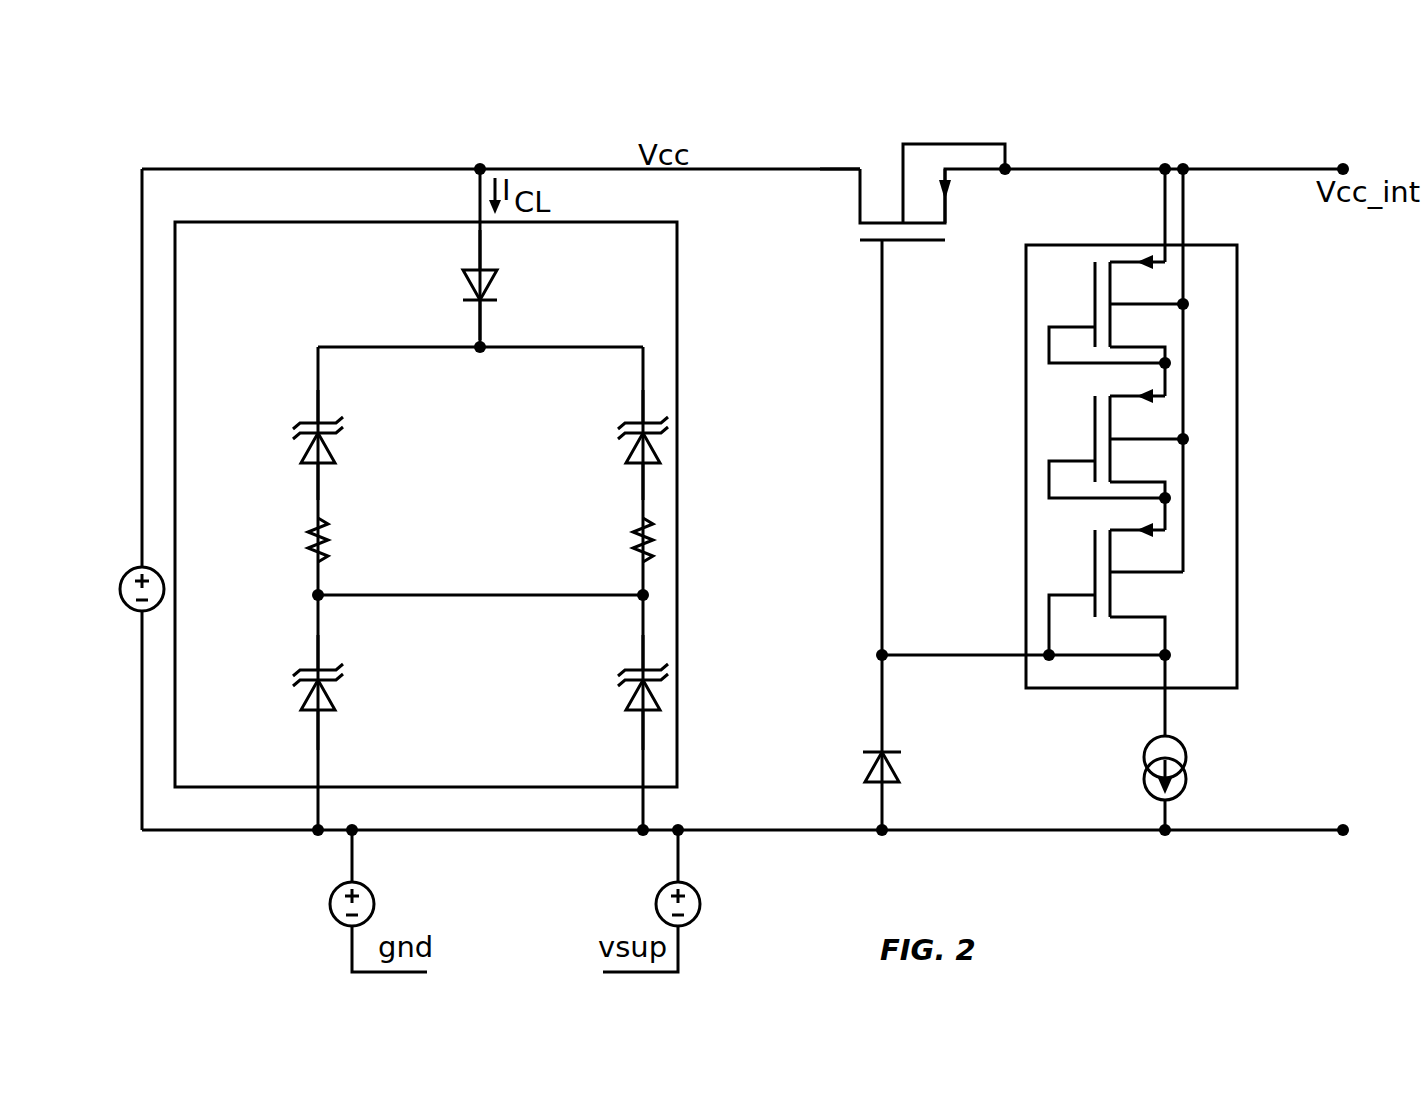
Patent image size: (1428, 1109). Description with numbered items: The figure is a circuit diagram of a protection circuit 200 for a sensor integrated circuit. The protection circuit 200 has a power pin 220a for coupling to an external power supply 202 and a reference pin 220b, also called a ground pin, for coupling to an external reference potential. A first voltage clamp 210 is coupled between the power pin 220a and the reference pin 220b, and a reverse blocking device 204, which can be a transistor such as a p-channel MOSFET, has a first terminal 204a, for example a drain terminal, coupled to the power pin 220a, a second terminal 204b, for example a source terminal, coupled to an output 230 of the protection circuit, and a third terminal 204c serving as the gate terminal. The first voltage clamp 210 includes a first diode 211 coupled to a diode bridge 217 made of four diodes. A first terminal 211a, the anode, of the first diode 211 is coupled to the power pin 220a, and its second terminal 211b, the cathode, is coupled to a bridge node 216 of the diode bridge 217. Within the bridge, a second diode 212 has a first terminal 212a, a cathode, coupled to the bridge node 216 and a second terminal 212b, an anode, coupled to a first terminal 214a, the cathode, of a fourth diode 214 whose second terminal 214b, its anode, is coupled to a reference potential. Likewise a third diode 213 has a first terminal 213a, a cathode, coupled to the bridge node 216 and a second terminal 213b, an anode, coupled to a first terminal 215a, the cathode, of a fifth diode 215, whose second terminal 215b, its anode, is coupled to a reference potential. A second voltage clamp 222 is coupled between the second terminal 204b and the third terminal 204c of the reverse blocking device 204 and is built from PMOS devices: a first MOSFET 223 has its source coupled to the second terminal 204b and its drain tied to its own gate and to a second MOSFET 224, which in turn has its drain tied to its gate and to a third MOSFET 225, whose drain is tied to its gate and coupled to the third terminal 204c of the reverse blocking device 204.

The protection circuit 200 is at (1216, 110).
The external power supply 202 is at (122, 576).
The reverse blocking device 204 is at (888, 160).
The first terminal 204a is at (832, 180).
The second terminal 204b is at (962, 172).
The third terminal 204c is at (880, 242).
The first voltage clamp 210 is at (598, 222).
The first diode 211 is at (492, 284).
The first terminal 211a is at (483, 270).
The second terminal 211b is at (485, 303).
The second diode 212 is at (330, 440).
The first terminal 212a is at (326, 424).
The second terminal 212b is at (322, 466).
The third diode 213 is at (655, 440).
The first terminal 213a is at (651, 424).
The second terminal 213b is at (647, 466).
The fourth diode 214 is at (330, 687).
The first terminal 214a is at (326, 671).
The second terminal 214b is at (322, 713).
The fifth diode 215 is at (655, 687).
The first terminal 215a is at (651, 671).
The second terminal 215b is at (647, 713).
The bridge node 216 is at (483, 351).
The diode bridge 217 is at (480, 559).
The power pin 220a is at (483, 165).
The reference pin 220b is at (314, 835).
The second voltage clamp 222 is at (1205, 690).
The first MOSFET 223 is at (1190, 305).
The second MOSFET 224 is at (1190, 440).
The third MOSFET 225 is at (1190, 574).
The output 230 is at (1346, 165).